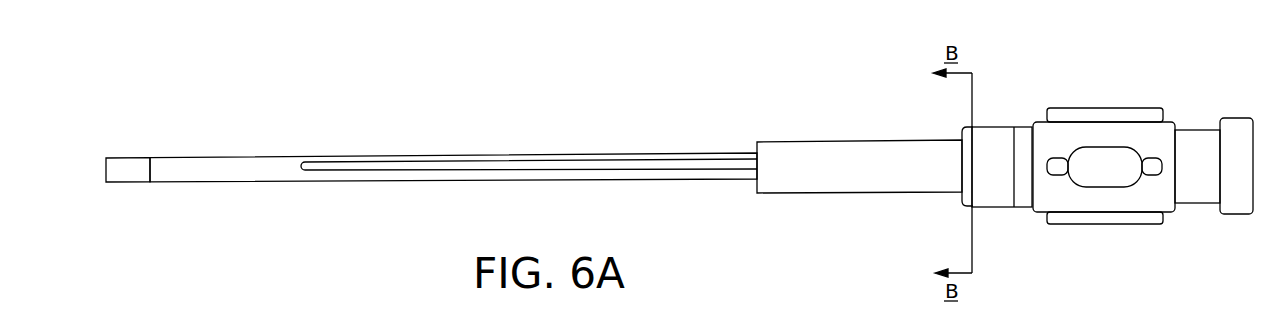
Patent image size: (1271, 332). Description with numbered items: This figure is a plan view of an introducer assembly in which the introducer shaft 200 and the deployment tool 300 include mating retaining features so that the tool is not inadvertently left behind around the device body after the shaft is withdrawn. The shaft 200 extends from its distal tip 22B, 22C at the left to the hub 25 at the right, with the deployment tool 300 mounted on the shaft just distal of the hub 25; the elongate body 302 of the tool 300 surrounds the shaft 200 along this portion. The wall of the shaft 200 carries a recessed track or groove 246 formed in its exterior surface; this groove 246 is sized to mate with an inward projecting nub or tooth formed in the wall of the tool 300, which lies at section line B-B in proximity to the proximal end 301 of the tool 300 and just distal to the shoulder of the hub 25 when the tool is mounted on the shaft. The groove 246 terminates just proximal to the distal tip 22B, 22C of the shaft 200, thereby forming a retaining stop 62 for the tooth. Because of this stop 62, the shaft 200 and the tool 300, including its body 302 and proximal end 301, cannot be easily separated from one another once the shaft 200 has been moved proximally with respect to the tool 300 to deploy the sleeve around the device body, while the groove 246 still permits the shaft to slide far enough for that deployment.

The introducer shaft 200 is at (431, 162).
The retaining stop 62 is at (307, 182).
The distal tip 22B is at (173, 202).
The distal tip 22C is at (128, 182).
The groove 246 is at (440, 160).
The deployment tool 300 is at (834, 157).
The hub body 302 is at (773, 193).
The proximal end 301 is at (988, 137).
The hub 25 is at (1057, 203).